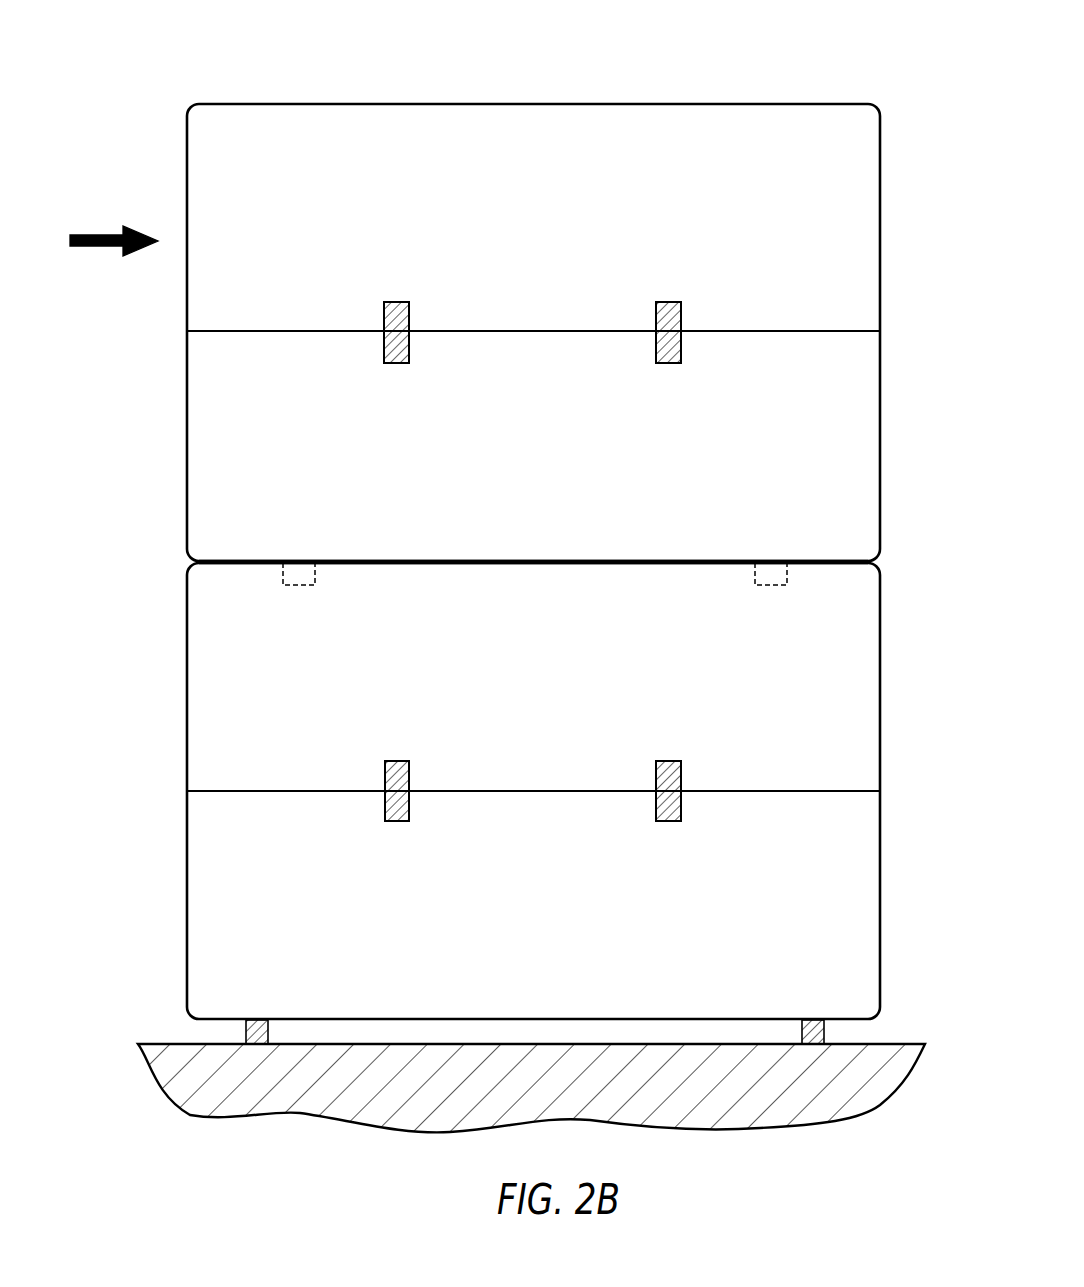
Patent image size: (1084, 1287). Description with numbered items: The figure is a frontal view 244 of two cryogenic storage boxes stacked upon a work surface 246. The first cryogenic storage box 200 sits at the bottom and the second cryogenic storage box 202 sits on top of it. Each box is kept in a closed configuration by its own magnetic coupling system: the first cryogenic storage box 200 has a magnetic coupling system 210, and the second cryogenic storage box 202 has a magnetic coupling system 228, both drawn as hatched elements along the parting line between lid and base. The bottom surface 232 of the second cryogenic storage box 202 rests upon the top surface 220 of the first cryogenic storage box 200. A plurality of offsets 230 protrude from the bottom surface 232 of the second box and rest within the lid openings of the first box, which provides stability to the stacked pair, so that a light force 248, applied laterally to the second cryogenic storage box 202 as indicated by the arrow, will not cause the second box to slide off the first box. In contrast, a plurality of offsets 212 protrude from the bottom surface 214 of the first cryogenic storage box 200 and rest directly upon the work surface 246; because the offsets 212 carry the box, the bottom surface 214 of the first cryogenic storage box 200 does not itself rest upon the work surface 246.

The frontal view 244 is at (143, 95).
The light force 248 is at (98, 247).
The second cryogenic storage box 202 is at (138, 337).
The magnetic coupling system 228 is at (420, 345).
The bottom surface 232 is at (521, 549).
The offsets 230 is at (300, 586).
The top surface 220 is at (553, 580).
The first cryogenic storage box 200 is at (138, 793).
The magnetic coupling system 210 is at (428, 810).
The offsets 212 is at (270, 1026).
The bottom surface 214 is at (658, 1030).
The work surface 246 is at (448, 1097).